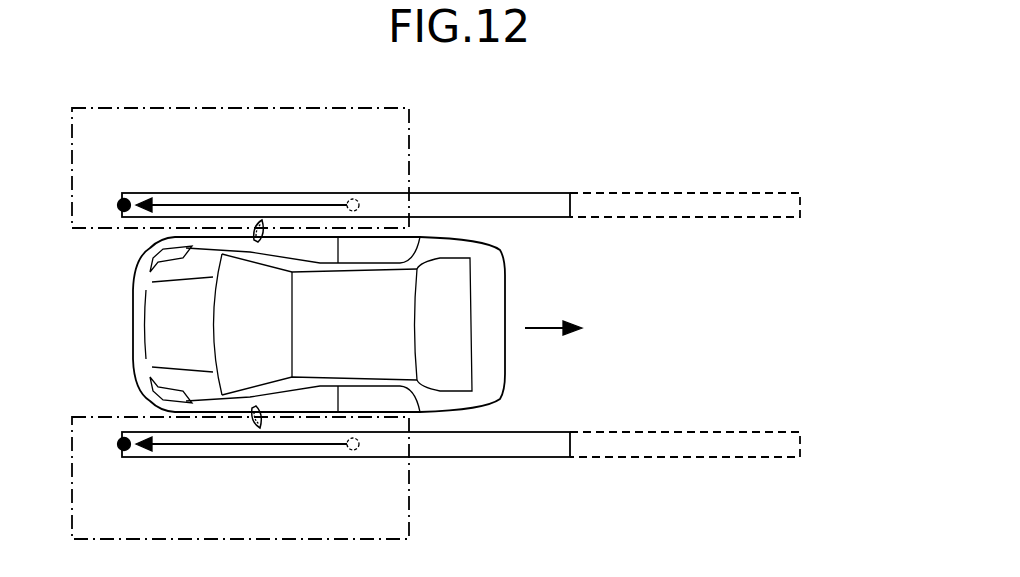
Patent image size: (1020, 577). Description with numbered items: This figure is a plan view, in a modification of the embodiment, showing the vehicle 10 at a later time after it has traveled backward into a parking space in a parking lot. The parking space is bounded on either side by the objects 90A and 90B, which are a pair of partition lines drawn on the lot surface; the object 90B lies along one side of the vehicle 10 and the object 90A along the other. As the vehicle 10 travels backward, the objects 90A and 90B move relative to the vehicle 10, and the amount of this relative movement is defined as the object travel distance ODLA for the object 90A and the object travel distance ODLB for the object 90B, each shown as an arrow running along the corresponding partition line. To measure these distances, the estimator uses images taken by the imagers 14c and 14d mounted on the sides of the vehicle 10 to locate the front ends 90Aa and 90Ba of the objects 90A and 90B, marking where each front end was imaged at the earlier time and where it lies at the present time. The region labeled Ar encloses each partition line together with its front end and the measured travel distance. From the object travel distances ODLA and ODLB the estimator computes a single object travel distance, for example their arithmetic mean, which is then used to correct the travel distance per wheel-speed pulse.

The vehicle 10 is at (133, 318).
The imager 14c is at (256, 427).
The imager 14d is at (258, 222).
The object 90A is at (458, 457).
The object 90B is at (458, 193).
The front end 90Aa is at (118, 449).
The front end 90Ba is at (118, 200).
The object travel distance ODLA is at (174, 449).
The object travel distance ODLB is at (174, 200).
The detection area Ar is at (409, 118).